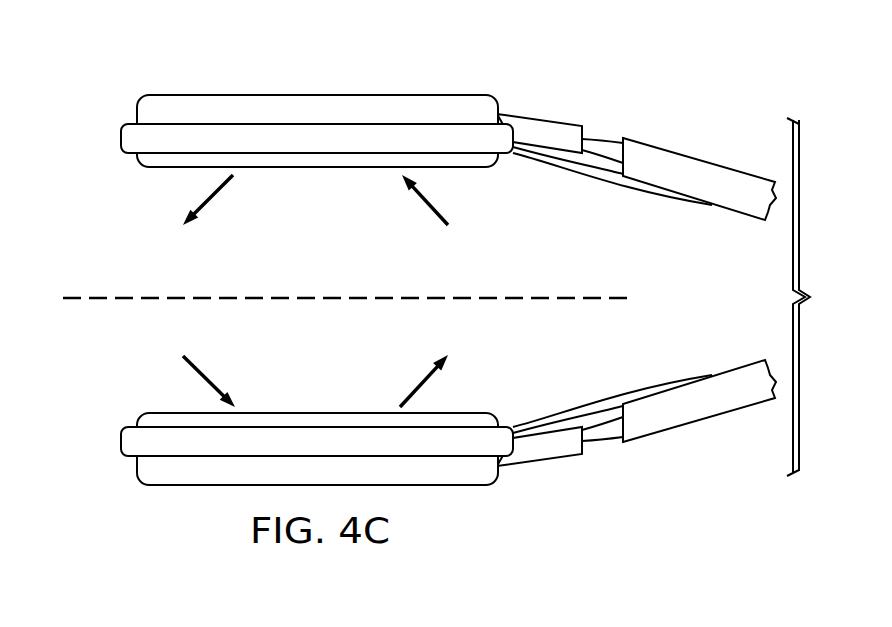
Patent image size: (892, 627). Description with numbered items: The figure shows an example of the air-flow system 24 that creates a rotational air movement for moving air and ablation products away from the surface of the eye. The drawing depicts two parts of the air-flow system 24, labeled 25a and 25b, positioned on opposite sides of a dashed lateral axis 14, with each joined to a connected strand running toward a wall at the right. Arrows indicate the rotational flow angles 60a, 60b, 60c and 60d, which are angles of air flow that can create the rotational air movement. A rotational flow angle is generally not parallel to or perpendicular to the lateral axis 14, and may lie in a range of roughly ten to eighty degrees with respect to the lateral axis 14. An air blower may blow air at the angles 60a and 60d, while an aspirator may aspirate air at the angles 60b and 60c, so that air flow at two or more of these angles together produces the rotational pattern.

The lateral axis 14 is at (573, 295).
The air-flow system 24 is at (526, 56).
The first clamp block 25a is at (135, 123).
The second clamp block 25b is at (135, 460).
The rotational flow angle 60a is at (217, 195).
The rotational flow angle 60b is at (225, 352).
The rotational flow angle 60c is at (432, 215).
The rotational flow angle 60d is at (417, 386).